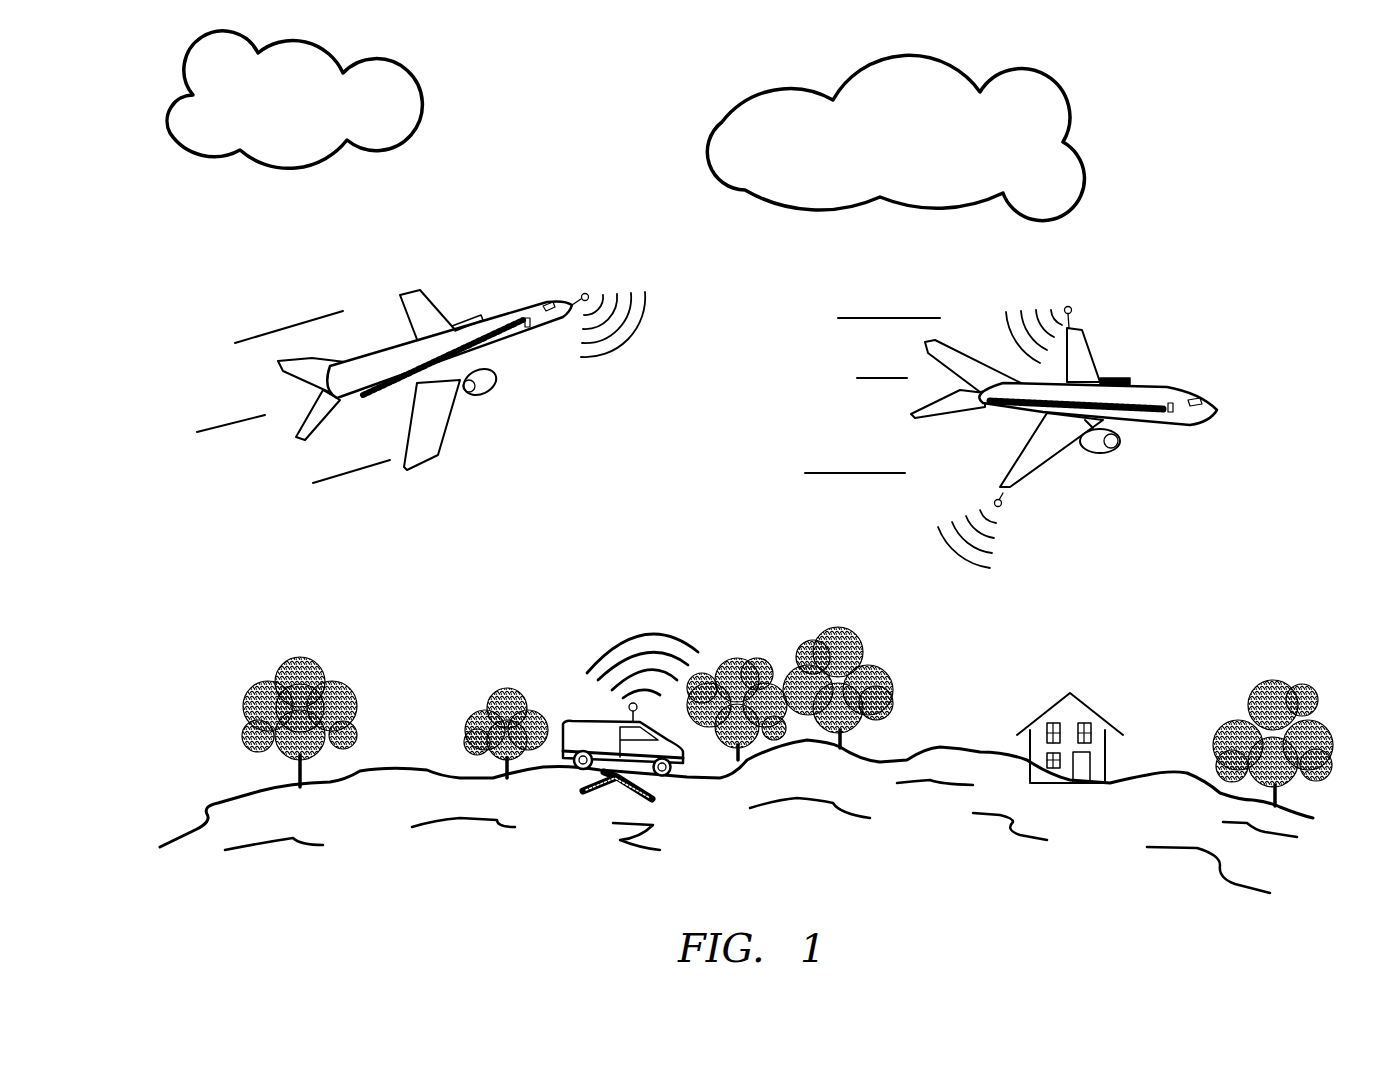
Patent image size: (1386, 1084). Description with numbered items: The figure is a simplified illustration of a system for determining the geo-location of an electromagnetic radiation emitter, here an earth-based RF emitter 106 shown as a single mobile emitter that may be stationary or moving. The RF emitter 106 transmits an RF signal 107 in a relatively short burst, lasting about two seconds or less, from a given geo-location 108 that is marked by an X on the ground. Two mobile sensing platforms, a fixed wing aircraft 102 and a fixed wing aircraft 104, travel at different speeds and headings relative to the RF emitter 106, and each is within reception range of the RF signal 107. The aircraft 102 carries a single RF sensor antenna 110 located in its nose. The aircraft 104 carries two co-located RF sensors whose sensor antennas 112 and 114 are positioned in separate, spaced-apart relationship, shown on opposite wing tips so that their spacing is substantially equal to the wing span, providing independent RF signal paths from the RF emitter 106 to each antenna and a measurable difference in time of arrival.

The fixed wing aircraft 102 is at (520, 345).
The fixed wing aircraft 104 is at (1002, 413).
The earth-based RF emitter 106 is at (588, 720).
The RF signal 107 is at (684, 645).
The geo-location 108 is at (600, 793).
The RF sensor antenna 110 is at (590, 294).
The sensor antenna 112 is at (1003, 508).
The sensor antenna 114 is at (1071, 308).